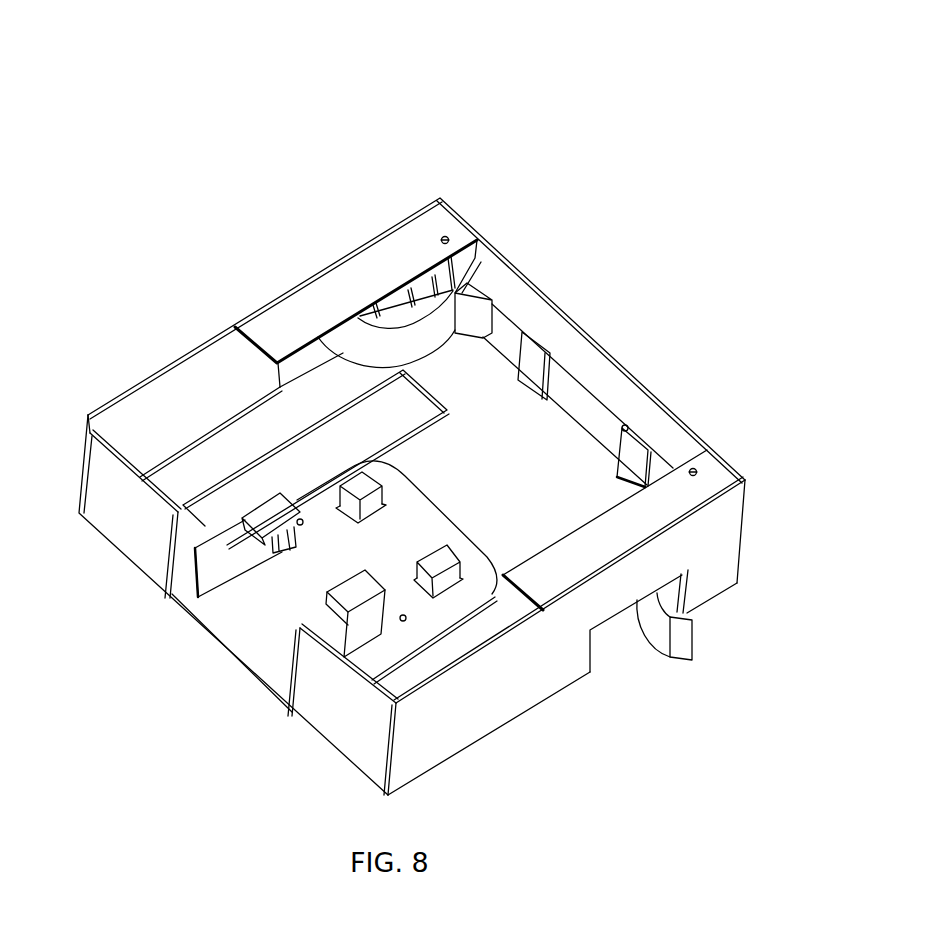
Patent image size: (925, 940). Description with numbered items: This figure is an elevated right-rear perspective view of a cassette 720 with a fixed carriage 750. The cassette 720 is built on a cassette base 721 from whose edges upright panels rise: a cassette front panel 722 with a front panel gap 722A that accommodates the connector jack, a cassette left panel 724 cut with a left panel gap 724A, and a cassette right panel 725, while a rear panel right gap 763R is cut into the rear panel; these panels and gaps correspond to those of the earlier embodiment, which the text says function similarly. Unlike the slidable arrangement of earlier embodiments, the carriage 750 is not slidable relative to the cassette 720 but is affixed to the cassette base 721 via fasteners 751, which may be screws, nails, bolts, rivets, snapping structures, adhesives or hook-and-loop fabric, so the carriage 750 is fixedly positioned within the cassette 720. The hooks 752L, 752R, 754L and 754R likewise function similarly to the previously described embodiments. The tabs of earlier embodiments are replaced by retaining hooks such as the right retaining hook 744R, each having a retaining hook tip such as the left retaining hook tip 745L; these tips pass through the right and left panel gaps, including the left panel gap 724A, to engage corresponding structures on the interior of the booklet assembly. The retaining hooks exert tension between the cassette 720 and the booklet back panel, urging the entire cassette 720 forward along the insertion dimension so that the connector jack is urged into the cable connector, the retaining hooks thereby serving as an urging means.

The cassette 720 is at (130, 143).
The cassette base 721 is at (320, 392).
The side wall 722 is at (655, 410).
The side wall opening 722A is at (583, 383).
The front wall 724 is at (712, 566).
The left panel gap 724A is at (592, 652).
The top ledge 725 is at (150, 417).
The retaining hook 744R is at (375, 335).
The retaining hook tip 745L is at (683, 637).
The carriage 750 is at (248, 652).
The fasteners 751 is at (405, 622).
The hook 752R is at (357, 487).
The hook 752L is at (445, 560).
The right bracket 754R is at (478, 308).
The hook 754L is at (362, 628).
The right roller mount 763R is at (462, 270).